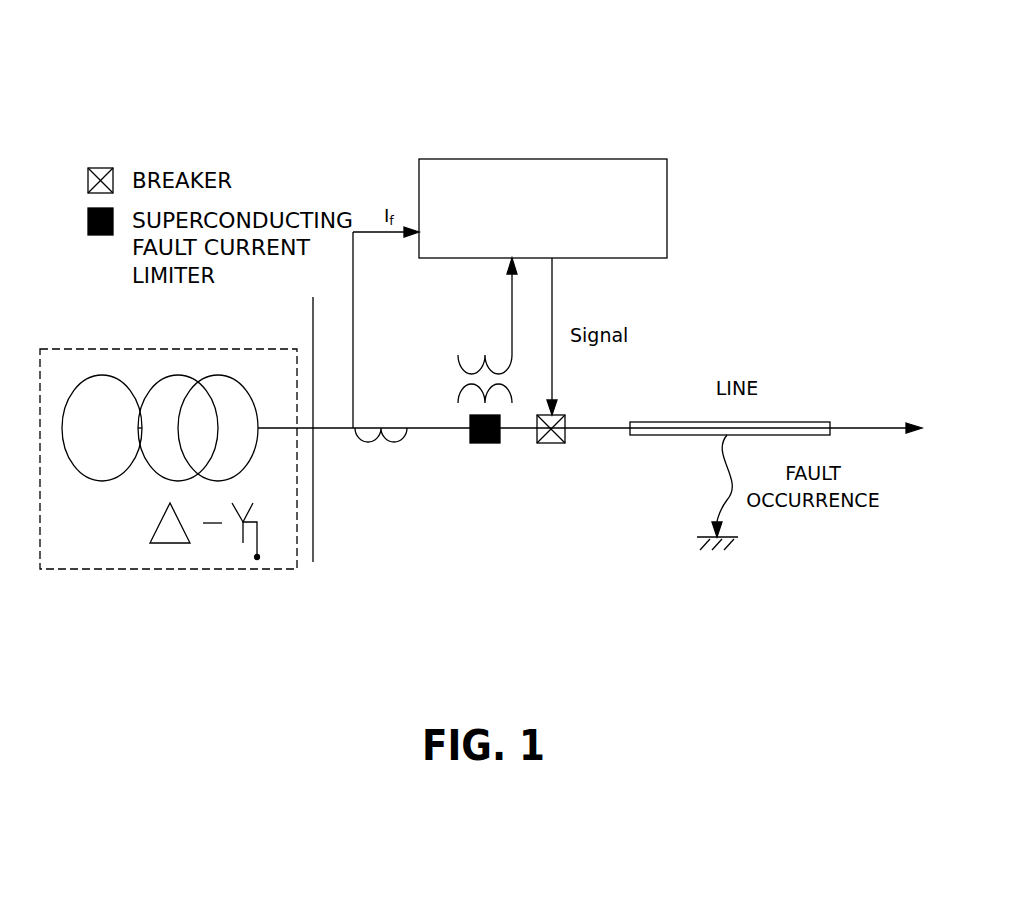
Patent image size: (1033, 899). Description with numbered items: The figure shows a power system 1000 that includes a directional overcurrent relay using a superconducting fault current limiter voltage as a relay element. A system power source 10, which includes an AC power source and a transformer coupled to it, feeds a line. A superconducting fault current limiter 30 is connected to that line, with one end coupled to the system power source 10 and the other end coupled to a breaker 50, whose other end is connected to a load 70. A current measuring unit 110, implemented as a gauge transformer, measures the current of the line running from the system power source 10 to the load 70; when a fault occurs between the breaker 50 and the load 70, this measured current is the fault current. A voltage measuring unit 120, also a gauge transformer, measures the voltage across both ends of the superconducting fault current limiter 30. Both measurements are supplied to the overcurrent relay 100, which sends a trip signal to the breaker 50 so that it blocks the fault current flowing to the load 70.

The power system 1000 is at (152, 33).
The system power source 10 is at (168, 569).
The superconducting fault current limiter 30 is at (485, 443).
The breaker 50 is at (548, 443).
The load 70 is at (900, 368).
The overcurrent relay 100 is at (613, 159).
The current measuring unit 110 is at (382, 443).
The voltage measuring unit 120 is at (458, 380).